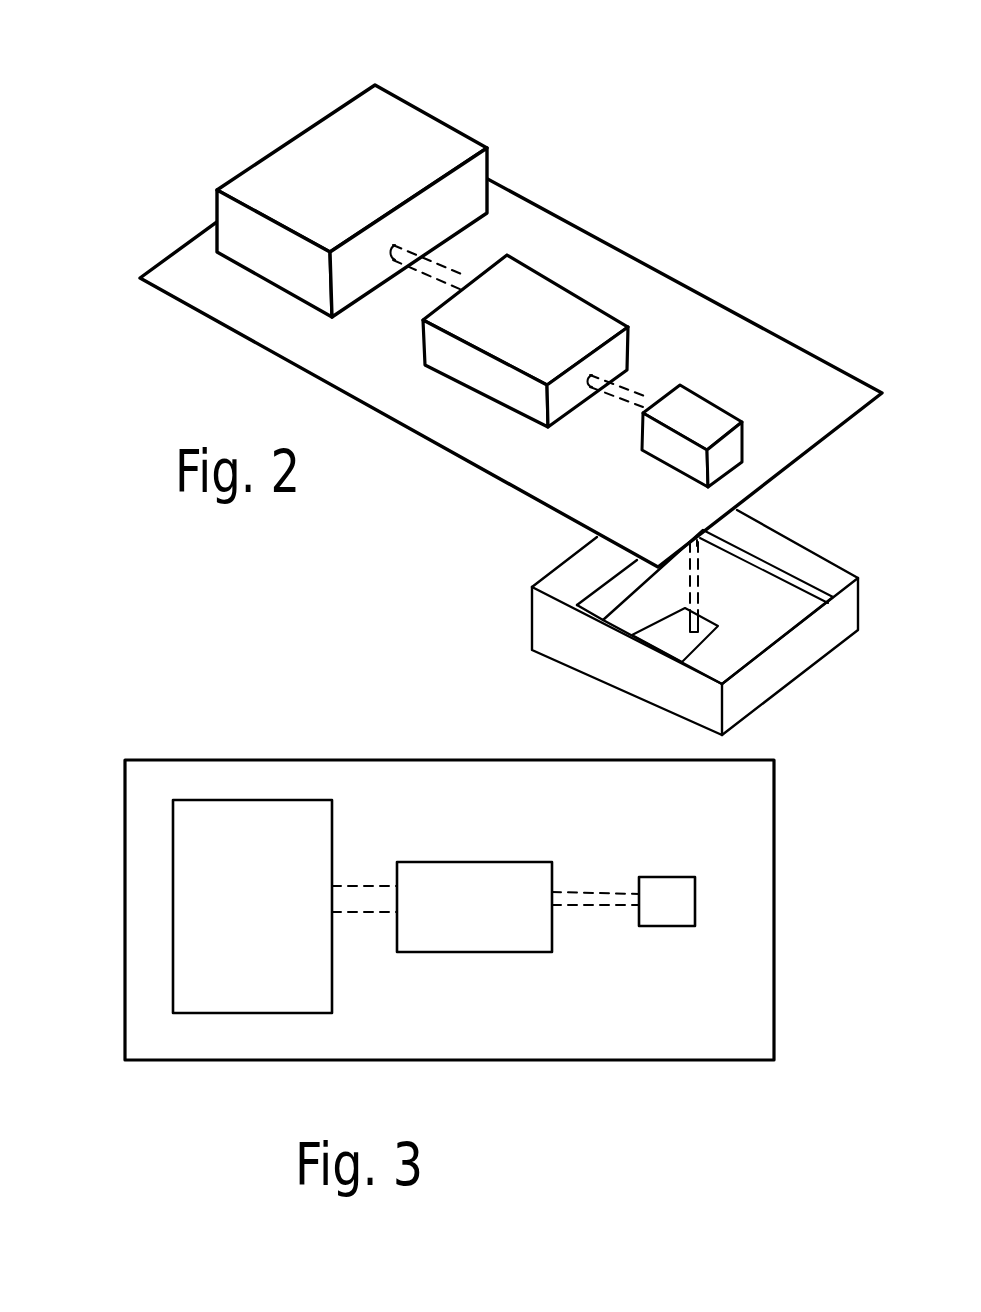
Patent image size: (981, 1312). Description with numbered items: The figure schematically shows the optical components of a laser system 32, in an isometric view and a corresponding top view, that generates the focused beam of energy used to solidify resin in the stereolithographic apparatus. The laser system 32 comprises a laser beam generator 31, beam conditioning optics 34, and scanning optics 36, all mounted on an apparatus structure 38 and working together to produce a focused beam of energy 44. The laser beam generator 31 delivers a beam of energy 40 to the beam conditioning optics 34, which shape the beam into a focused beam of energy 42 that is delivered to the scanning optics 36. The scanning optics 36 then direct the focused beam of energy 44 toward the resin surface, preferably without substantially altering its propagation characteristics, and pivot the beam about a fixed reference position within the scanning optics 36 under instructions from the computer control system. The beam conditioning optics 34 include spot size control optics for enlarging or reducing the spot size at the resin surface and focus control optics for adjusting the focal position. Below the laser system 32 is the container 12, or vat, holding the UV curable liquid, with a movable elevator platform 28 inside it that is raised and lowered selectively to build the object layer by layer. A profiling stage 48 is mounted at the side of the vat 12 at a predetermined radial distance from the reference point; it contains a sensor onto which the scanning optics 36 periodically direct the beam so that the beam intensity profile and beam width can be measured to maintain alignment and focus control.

In FIG. 2, the container 12 is at (538, 617).
In FIG. 2, the movable elevator platform 28 is at (787, 597).
In FIG. 2, the laser beam generator 31 is at (313, 160).
In FIG. 3, the laser beam generator 31 is at (187, 872).
In FIG. 2, the laser system 32 is at (668, 126).
In FIG. 3, the laser system 32 is at (118, 698).
In FIG. 2, the beam conditioning optics 34 is at (547, 303).
In FIG. 3, the beam conditioning optics 34 is at (475, 940).
In FIG. 2, the scanning optics 36 is at (700, 413).
In FIG. 3, the scanning optics 36 is at (670, 913).
In FIG. 2, the apparatus structure 38 is at (173, 252).
In FIG. 3, the apparatus structure 38 is at (273, 758).
In FIG. 2, the beam of energy 40 is at (447, 258).
In FIG. 3, the beam of energy 40 is at (355, 912).
In FIG. 2, the focused beam of energy 42 is at (620, 387).
In FIG. 3, the focused beam of energy 42 is at (578, 907).
In FIG. 2, the focused beam of energy 44 is at (688, 597).
In FIG. 2, the profiling stage 48 is at (670, 638).